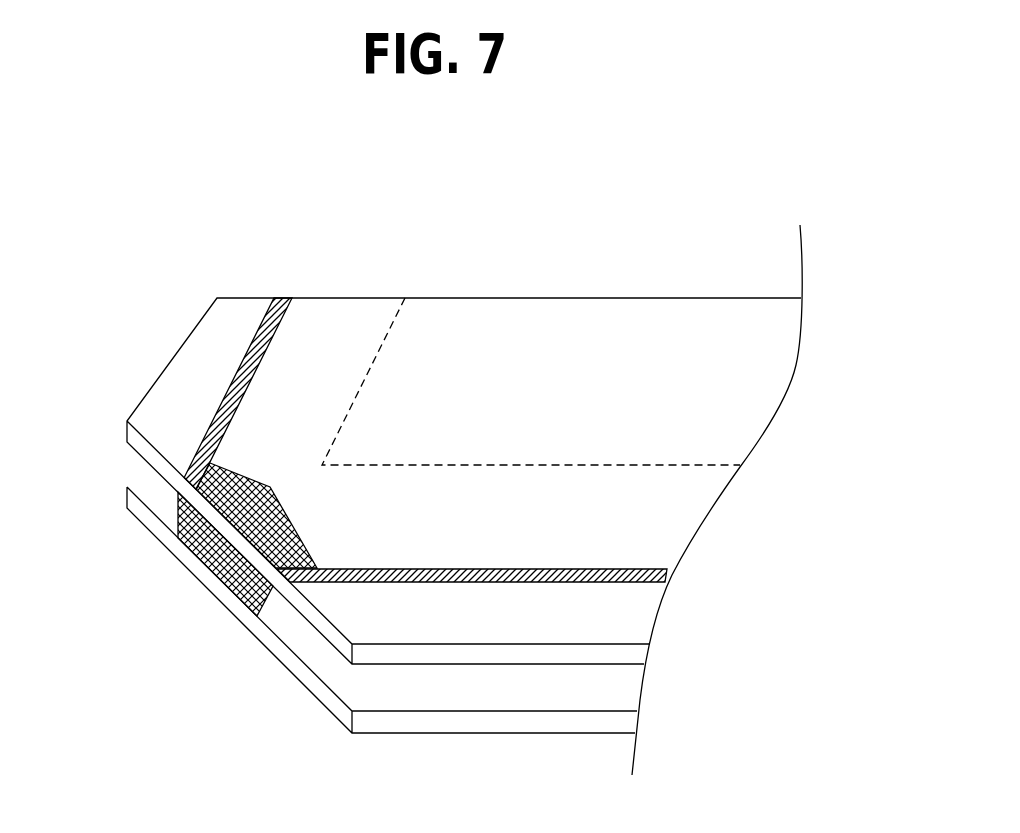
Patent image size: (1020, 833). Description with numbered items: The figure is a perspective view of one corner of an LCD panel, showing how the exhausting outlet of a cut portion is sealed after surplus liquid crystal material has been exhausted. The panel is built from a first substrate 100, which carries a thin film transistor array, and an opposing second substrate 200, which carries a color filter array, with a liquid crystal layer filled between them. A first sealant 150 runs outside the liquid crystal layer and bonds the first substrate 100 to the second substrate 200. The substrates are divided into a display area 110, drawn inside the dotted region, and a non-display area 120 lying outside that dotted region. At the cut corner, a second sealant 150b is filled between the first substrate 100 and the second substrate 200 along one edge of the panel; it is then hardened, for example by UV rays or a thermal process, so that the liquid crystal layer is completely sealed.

The first substrate 100 is at (148, 480).
The second substrate 200 is at (185, 378).
The display area 110 is at (742, 395).
The non-display area 120 is at (702, 465).
The first sealant 150 is at (274, 301).
The second sealant 150b is at (243, 482).